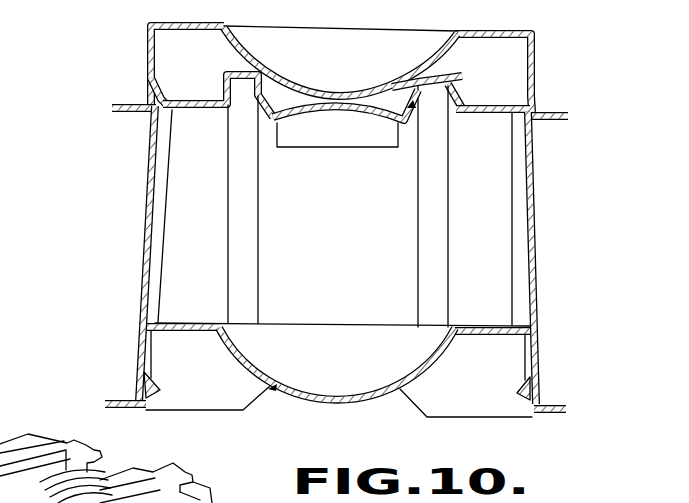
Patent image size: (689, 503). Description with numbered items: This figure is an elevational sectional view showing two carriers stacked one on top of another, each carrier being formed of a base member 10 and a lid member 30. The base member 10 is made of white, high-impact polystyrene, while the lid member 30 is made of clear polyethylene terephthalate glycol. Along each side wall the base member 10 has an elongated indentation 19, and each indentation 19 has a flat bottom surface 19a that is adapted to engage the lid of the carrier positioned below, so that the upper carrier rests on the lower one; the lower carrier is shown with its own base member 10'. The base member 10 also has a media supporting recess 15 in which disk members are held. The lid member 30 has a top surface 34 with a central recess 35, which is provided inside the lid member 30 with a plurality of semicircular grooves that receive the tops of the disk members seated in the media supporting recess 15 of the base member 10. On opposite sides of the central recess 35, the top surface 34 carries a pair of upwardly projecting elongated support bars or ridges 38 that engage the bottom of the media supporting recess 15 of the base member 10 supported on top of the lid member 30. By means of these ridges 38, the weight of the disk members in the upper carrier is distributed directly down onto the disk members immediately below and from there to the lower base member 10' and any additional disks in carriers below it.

The base member 10 is at (336, 71).
The elongated indentation 19 is at (155, 83).
The flat bottom surface 19a is at (160, 88).
The media supporting recess 15 is at (336, 88).
The support bar or ridge 38 is at (452, 78).
The top surface 34 is at (495, 121).
The central recess 35 is at (361, 121).
The lid member 30 is at (144, 223).
The base member 10' is at (335, 280).